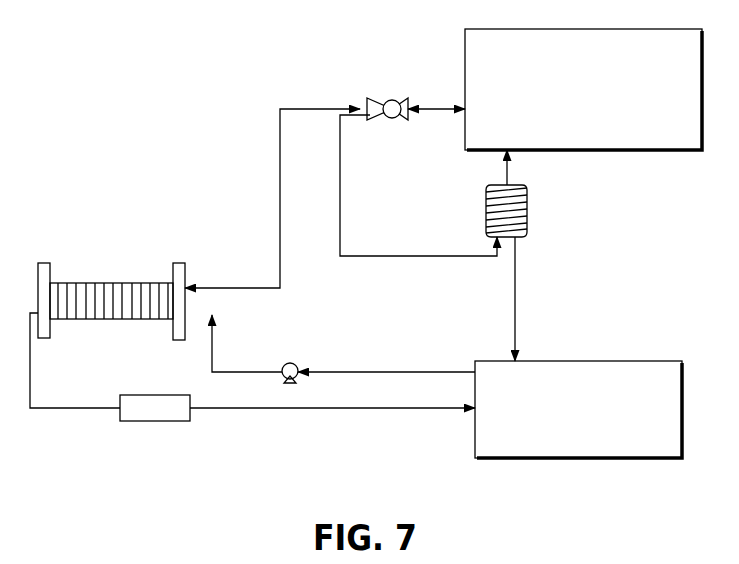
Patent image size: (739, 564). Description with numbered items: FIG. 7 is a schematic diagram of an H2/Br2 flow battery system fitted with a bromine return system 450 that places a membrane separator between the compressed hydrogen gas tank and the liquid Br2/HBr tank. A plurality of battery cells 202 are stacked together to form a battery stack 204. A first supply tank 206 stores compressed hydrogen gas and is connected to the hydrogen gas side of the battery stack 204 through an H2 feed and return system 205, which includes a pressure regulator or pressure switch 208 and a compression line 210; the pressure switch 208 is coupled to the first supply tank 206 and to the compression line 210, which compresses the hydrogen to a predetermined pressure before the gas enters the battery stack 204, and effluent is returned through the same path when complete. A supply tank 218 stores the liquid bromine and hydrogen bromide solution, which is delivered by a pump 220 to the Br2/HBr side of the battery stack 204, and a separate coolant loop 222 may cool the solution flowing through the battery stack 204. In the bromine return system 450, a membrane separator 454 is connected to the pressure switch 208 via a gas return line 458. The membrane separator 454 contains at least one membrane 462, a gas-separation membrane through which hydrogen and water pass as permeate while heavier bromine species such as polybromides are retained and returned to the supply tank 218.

The battery cells 202 is at (100, 283).
The battery stack 204 is at (131, 242).
The H2 feed and return system 205 is at (252, 90).
The first supply tank 206 is at (465, 50).
The pressure switch 208 is at (372, 100).
The compression line 210 is at (280, 142).
The supply tank 218 is at (637, 361).
The pump 220 is at (282, 378).
The coolant loop 222 is at (135, 395).
The bromine return system 450 is at (617, 238).
The membrane separator 454 is at (527, 197).
The gas return line 458 is at (340, 178).
The membrane 462 is at (527, 226).